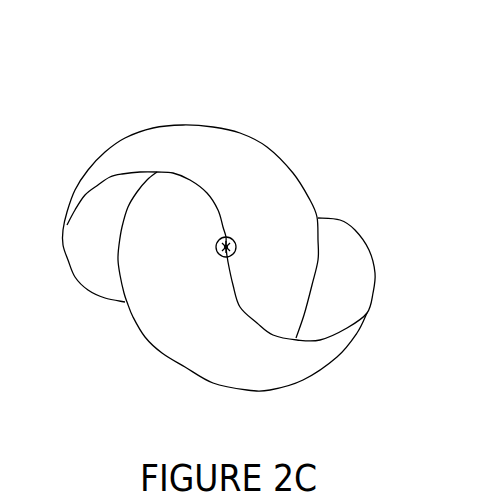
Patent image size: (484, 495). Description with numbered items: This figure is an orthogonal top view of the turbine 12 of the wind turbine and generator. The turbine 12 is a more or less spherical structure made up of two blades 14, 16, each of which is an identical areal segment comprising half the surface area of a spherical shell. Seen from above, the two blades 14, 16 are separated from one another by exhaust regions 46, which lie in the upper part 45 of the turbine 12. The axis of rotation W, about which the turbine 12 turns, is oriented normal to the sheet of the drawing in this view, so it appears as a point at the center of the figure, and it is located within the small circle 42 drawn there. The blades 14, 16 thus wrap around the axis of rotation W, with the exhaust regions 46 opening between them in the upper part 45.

The turbine 12 is at (213, 87).
The blade 14 is at (203, 343).
The blade 16 is at (247, 165).
The circle 42 is at (218, 256).
The upper part 45 is at (240, 208).
The exhaust regions 46 is at (335, 257).
The axis of rotation W is at (218, 238).